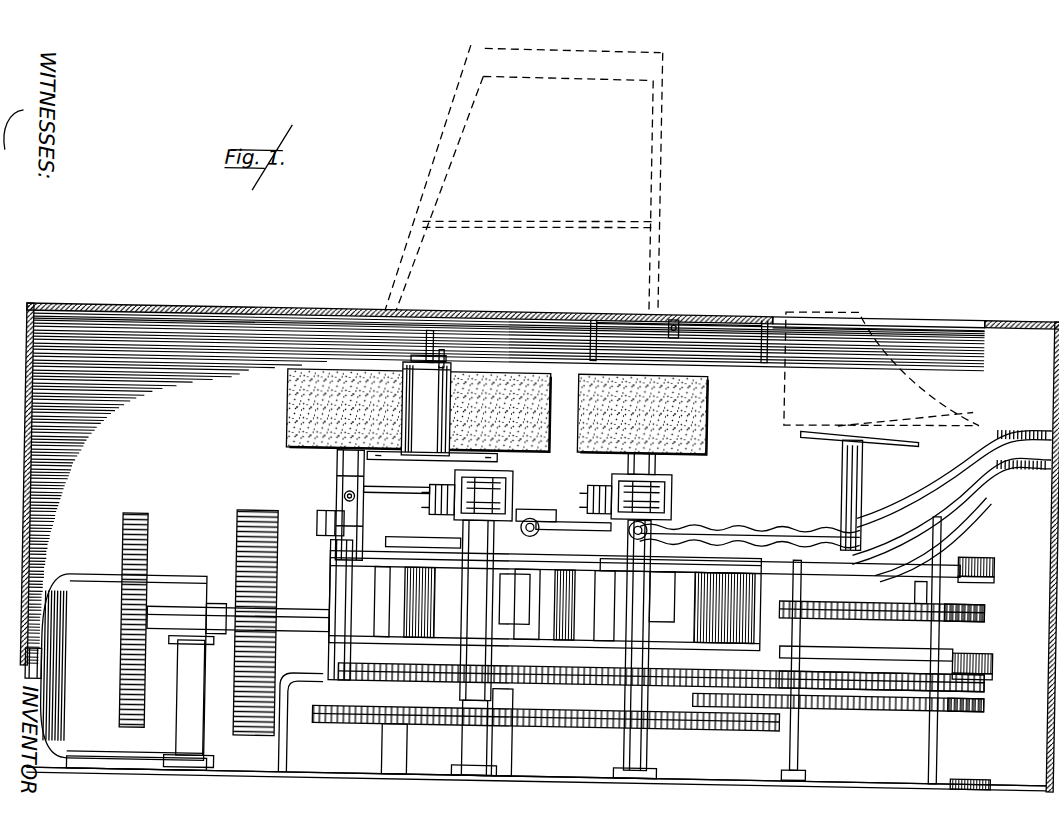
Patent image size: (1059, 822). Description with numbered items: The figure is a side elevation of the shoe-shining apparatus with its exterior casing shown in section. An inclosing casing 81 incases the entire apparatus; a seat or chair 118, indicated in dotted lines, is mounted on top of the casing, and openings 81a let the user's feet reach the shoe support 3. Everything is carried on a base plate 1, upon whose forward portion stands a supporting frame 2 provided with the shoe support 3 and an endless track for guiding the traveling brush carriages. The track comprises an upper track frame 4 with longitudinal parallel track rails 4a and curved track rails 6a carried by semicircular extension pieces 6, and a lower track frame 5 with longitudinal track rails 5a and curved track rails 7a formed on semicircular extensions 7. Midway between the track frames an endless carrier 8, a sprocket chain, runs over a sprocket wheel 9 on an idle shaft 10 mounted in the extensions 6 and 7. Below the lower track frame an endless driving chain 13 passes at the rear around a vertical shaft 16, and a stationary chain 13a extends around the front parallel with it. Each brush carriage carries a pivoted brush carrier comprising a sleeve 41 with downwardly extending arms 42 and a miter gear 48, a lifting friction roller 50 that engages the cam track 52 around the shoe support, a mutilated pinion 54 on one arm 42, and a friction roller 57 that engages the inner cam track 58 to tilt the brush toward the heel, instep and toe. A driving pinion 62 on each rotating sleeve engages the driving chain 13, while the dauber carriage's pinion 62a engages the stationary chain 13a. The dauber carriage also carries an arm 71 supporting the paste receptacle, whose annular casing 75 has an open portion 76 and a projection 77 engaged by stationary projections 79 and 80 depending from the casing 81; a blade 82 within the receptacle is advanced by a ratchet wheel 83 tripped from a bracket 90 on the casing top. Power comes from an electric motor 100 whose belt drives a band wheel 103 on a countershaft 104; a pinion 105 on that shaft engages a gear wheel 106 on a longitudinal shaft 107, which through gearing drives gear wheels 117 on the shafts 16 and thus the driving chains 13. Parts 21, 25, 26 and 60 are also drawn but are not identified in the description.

The base plate 1 is at (712, 767).
The supporting frame 2 is at (806, 720).
The shoe support 3 is at (845, 452).
The upper track frame 4 is at (750, 517).
The longitudinal parallel track rails 4a is at (750, 522).
The lower track frame 5 is at (876, 674).
The parallel longitudinal track rails 5a is at (840, 644).
The semicircular extension pieces 6 is at (1000, 548).
The curved track rails 6a is at (999, 562).
The semicircular extensions 7 is at (999, 650).
The curved track rails 7a is at (995, 636).
The endless carrier 8 is at (840, 587).
The sprocket wheel 9 is at (950, 590).
The idle shaft 10 is at (920, 574).
The driving chain 13 is at (704, 674).
The stationary chain 13a is at (960, 695).
The vertical shaft 16 is at (400, 717).
The carriage 21 is at (340, 564).
The lever 25 is at (574, 513).
The link 26 is at (552, 500).
The sleeve 41 is at (340, 455).
The arms 42 is at (340, 478).
The miter gear 48 is at (467, 586).
The friction roller 50 is at (321, 512).
The cam track 52 is at (1020, 441).
The mutilated pinion 54 is at (433, 488).
The friction roller 57 is at (392, 530).
The cam track 58 is at (992, 470).
The housing 60 is at (545, 601).
The driving pinion 62 is at (330, 668).
The driving pinion 62a is at (505, 700).
The arm 71 is at (500, 400).
The annular casing 75 is at (405, 375).
The open portion 76 is at (397, 480).
The projection 77 is at (520, 332).
The stationary projection 79 is at (508, 344).
The stationary projection 80 is at (679, 340).
The inclosing casing 81 is at (236, 303).
The openings 81a is at (922, 303).
The blade 82 is at (425, 360).
The ratchet wheel 83 is at (450, 347).
The bracket 90 is at (682, 342).
The electric motor 100 is at (70, 578).
The band wheel 103 is at (246, 506).
The countershaft 104 is at (205, 600).
The pinion 105 is at (128, 612).
The gear wheel 106 is at (140, 511).
The longitudinal shaft 107 is at (300, 610).
The gear wheel 117 is at (400, 740).
The seat 118 is at (448, 136).